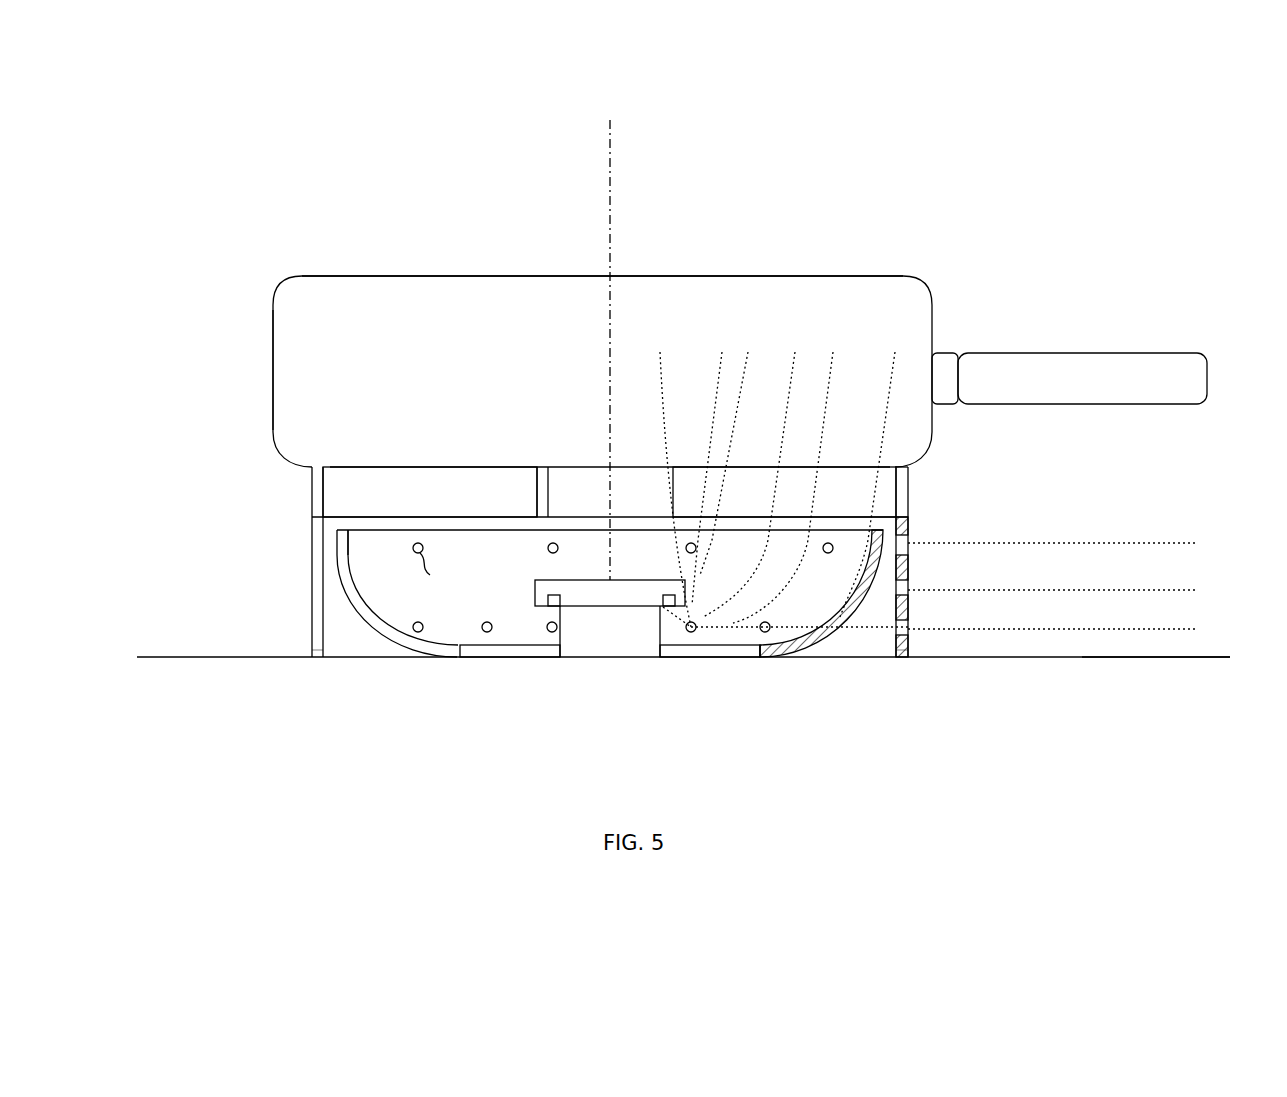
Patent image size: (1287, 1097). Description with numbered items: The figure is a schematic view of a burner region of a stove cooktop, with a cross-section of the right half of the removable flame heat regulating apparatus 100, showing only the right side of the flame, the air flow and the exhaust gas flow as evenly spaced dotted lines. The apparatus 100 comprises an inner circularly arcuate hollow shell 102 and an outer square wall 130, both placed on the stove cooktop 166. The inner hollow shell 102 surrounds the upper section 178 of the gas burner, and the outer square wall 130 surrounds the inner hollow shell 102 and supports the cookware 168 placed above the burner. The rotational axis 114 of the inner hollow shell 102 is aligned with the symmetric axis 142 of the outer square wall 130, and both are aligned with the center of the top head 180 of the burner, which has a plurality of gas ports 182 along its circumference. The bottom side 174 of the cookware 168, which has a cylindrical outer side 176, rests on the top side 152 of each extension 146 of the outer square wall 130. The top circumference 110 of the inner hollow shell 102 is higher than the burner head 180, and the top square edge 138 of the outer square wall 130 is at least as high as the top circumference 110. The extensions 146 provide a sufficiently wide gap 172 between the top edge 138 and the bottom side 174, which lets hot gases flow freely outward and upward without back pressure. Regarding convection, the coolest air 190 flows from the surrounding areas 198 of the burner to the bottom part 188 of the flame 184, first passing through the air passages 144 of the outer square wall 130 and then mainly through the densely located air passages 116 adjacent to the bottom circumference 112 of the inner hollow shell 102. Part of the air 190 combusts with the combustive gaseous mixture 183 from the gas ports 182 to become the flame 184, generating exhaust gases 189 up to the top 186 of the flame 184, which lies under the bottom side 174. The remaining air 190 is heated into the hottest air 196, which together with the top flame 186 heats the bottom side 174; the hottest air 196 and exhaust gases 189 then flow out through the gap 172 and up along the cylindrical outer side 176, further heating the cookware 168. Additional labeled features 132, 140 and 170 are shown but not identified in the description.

The removable flame heat regulating apparatus 100 is at (262, 592).
The inner circularly arcuate hollow shell 102 is at (855, 633).
The top circumference 110 is at (437, 530).
The bottom circumference 112 is at (760, 657).
The rotational axis 114 is at (612, 172).
The air passages 116 is at (483, 624).
The outer square wall 130 is at (925, 478).
The housing side wall 132 is at (312, 553).
The top square edge 138 is at (385, 517).
The housing base 140 is at (317, 657).
The symmetric axis 142 is at (612, 225).
The air passages 144 is at (910, 627).
The extension 146 is at (312, 503).
The top side 152 is at (306, 466).
The stove cooktop 166 is at (1082, 657).
The cookware 168 is at (945, 278).
The handle 170 is at (1063, 353).
The gap 172 is at (380, 505).
The bottom side 174 is at (373, 467).
The cylindrical outer side 176 is at (273, 380).
The upper section 178 is at (522, 595).
The top head 180 is at (610, 580).
The gas ports 182 is at (558, 605).
The combustive gaseous mixture 183 is at (673, 610).
The flame 184 is at (735, 557).
The top of the flame 186 is at (805, 505).
The bottom part of the flame 188 is at (740, 618).
The exhaust gases 189 is at (720, 380).
The air 190 is at (807, 618).
The hottest air 196 is at (892, 418).
The surrounding areas 198 is at (1082, 543).